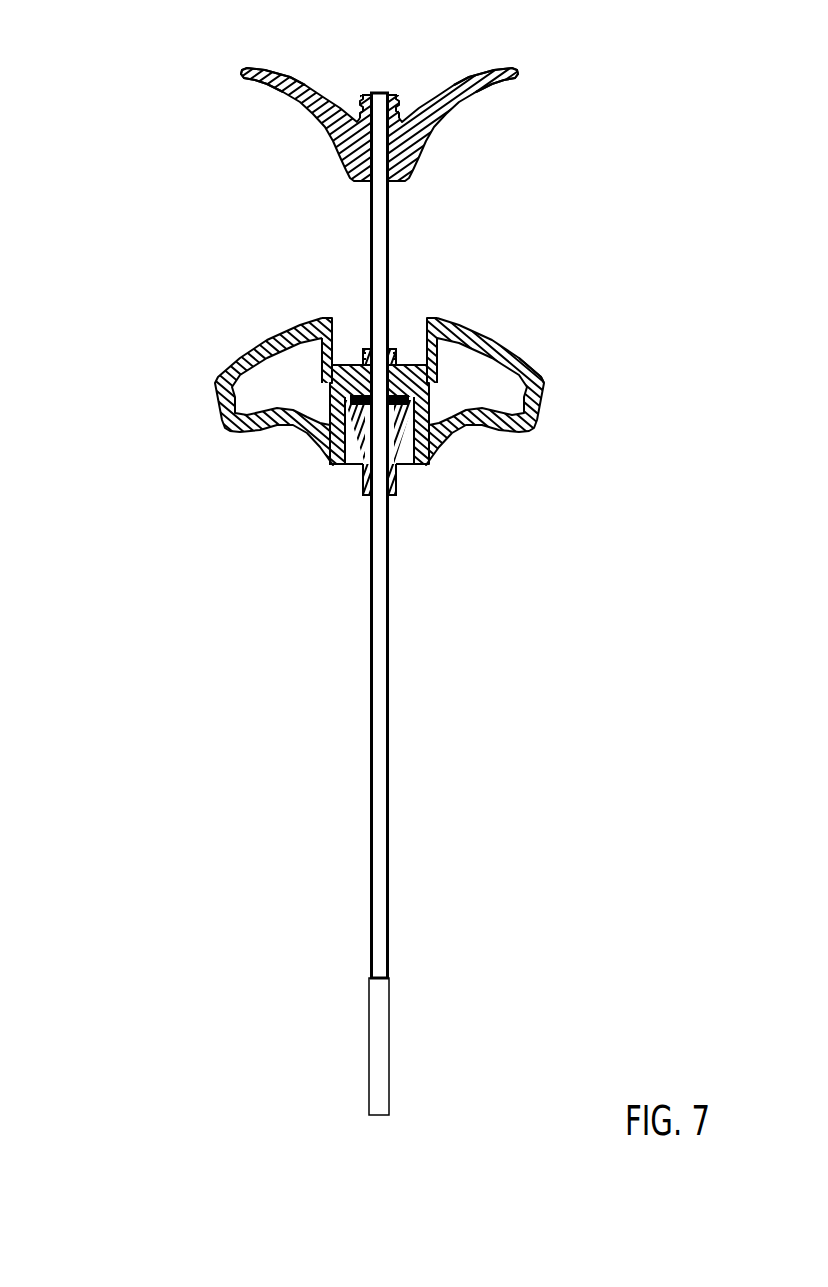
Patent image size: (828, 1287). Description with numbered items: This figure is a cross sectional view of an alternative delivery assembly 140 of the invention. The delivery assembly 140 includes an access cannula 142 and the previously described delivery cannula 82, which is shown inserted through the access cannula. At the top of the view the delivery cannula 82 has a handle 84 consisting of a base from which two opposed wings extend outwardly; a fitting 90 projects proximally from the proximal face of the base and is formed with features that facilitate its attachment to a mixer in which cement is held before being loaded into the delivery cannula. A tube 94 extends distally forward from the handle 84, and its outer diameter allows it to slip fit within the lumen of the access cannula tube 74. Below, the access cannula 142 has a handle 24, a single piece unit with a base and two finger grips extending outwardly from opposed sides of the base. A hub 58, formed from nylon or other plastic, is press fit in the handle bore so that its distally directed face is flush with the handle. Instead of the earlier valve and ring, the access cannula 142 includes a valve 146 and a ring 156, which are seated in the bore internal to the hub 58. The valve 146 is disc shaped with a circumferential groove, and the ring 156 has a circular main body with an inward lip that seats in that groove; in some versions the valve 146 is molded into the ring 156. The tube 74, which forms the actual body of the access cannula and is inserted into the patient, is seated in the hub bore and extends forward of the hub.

The delivery assembly 140 is at (230, 240).
The delivery cannula 82 is at (423, 157).
The handle 84 is at (288, 92).
The fitting 90 is at (397, 103).
The tube 94 is at (388, 262).
The handle 24 is at (218, 407).
The access cannula 142 is at (573, 393).
The ring 156 is at (428, 393).
The hub 58 is at (440, 440).
The valve 146 is at (333, 460).
The tube 74 is at (389, 1053).